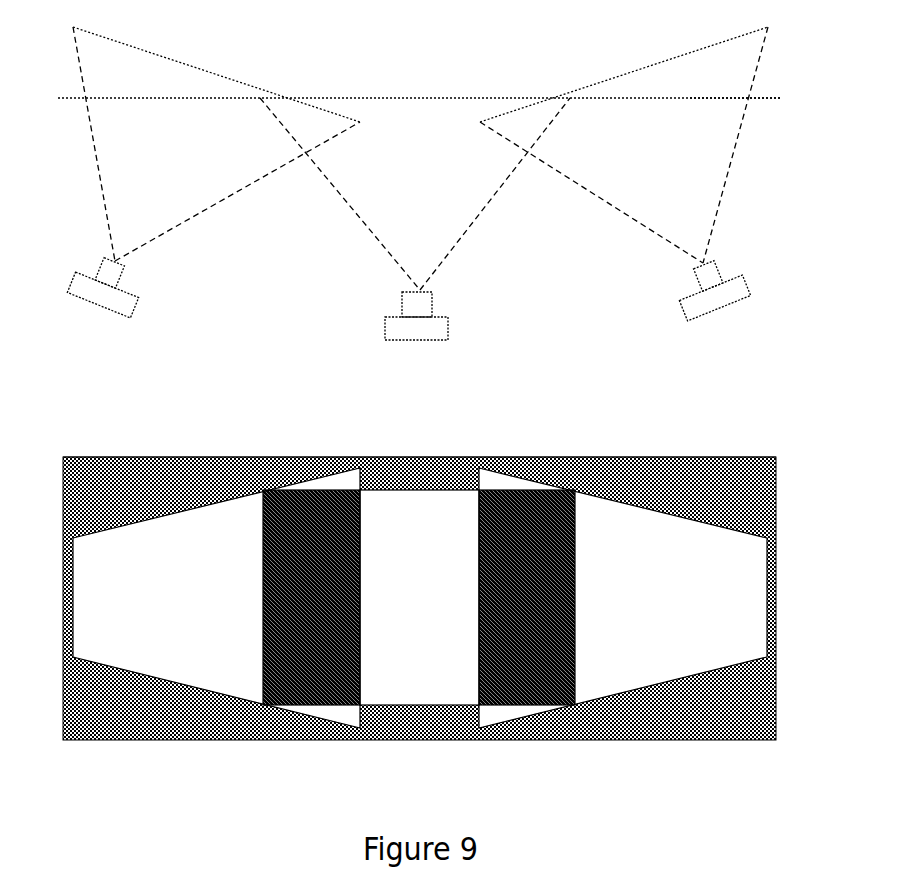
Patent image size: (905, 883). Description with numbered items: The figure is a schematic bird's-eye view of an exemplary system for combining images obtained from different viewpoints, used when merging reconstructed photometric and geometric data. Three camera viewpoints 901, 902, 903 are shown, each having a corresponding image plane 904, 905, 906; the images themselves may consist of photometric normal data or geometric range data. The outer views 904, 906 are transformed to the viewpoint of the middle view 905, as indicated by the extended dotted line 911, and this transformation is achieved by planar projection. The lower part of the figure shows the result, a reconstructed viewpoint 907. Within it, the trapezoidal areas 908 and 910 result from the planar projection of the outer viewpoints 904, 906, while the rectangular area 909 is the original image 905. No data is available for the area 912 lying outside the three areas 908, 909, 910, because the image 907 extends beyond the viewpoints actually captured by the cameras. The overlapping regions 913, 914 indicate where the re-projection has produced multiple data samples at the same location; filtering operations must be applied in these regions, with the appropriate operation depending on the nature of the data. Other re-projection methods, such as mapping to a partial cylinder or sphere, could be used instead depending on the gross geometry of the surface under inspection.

The camera viewpoint 901 is at (77, 302).
The camera viewpoint 902 is at (388, 332).
The camera viewpoint 903 is at (738, 302).
The image plane 904 is at (131, 46).
The image plane 905 is at (462, 97).
The image plane 906 is at (702, 47).
The reconstructed viewpoint 907 is at (465, 457).
The trapezoidal area 908 is at (185, 604).
The rectangular area 909 is at (427, 604).
The trapezoidal area 910 is at (677, 604).
The extended dotted line 911 is at (758, 100).
The area outside the three areas 912 is at (98, 470).
The overlapping region 913 is at (325, 706).
The overlapping region 914 is at (502, 706).